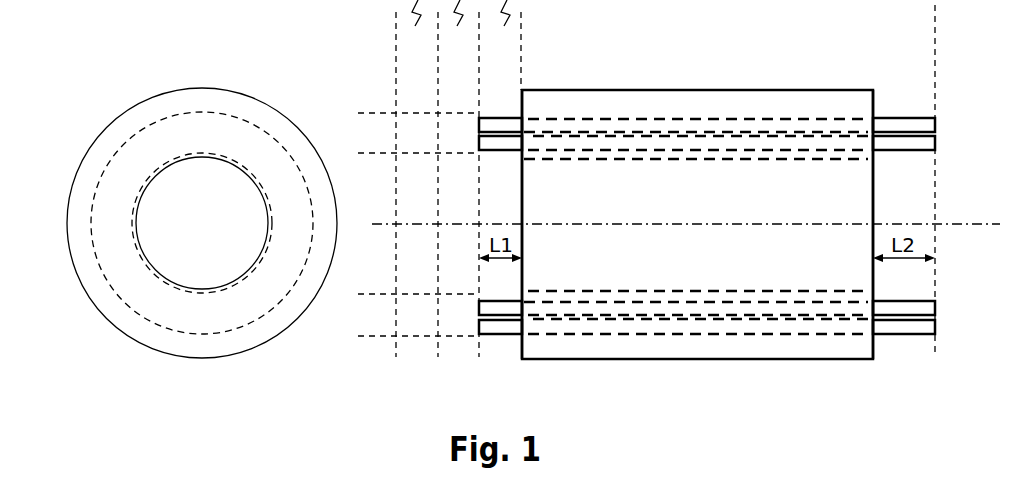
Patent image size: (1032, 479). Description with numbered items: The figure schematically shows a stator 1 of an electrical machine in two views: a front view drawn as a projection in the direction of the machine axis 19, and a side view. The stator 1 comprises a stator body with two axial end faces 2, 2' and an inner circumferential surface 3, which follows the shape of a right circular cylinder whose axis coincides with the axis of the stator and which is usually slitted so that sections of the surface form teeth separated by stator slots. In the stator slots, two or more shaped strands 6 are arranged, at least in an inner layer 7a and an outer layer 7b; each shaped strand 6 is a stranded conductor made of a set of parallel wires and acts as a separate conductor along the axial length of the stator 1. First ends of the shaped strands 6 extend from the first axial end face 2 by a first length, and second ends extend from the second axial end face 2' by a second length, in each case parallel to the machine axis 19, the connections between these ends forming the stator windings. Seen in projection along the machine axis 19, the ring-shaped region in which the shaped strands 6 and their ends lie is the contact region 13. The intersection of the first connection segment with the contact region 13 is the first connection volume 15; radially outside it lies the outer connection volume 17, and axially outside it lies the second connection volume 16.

The stator 1 is at (208, 348).
The first axial end face 2 is at (523, 203).
The second axial end face 2' is at (900, 210).
The inner circumferential surface 3 is at (184, 179).
The shaped strands 6 is at (500, 336).
The inner layer 7a is at (912, 147).
The outer layer 7b is at (912, 118).
The contact region 13 is at (242, 137).
The first connection volume 15 is at (446, 148).
The second connection volume 16 is at (401, 148).
The outer connection volume 17 is at (470, 104).
The machine axis 19 is at (665, 228).